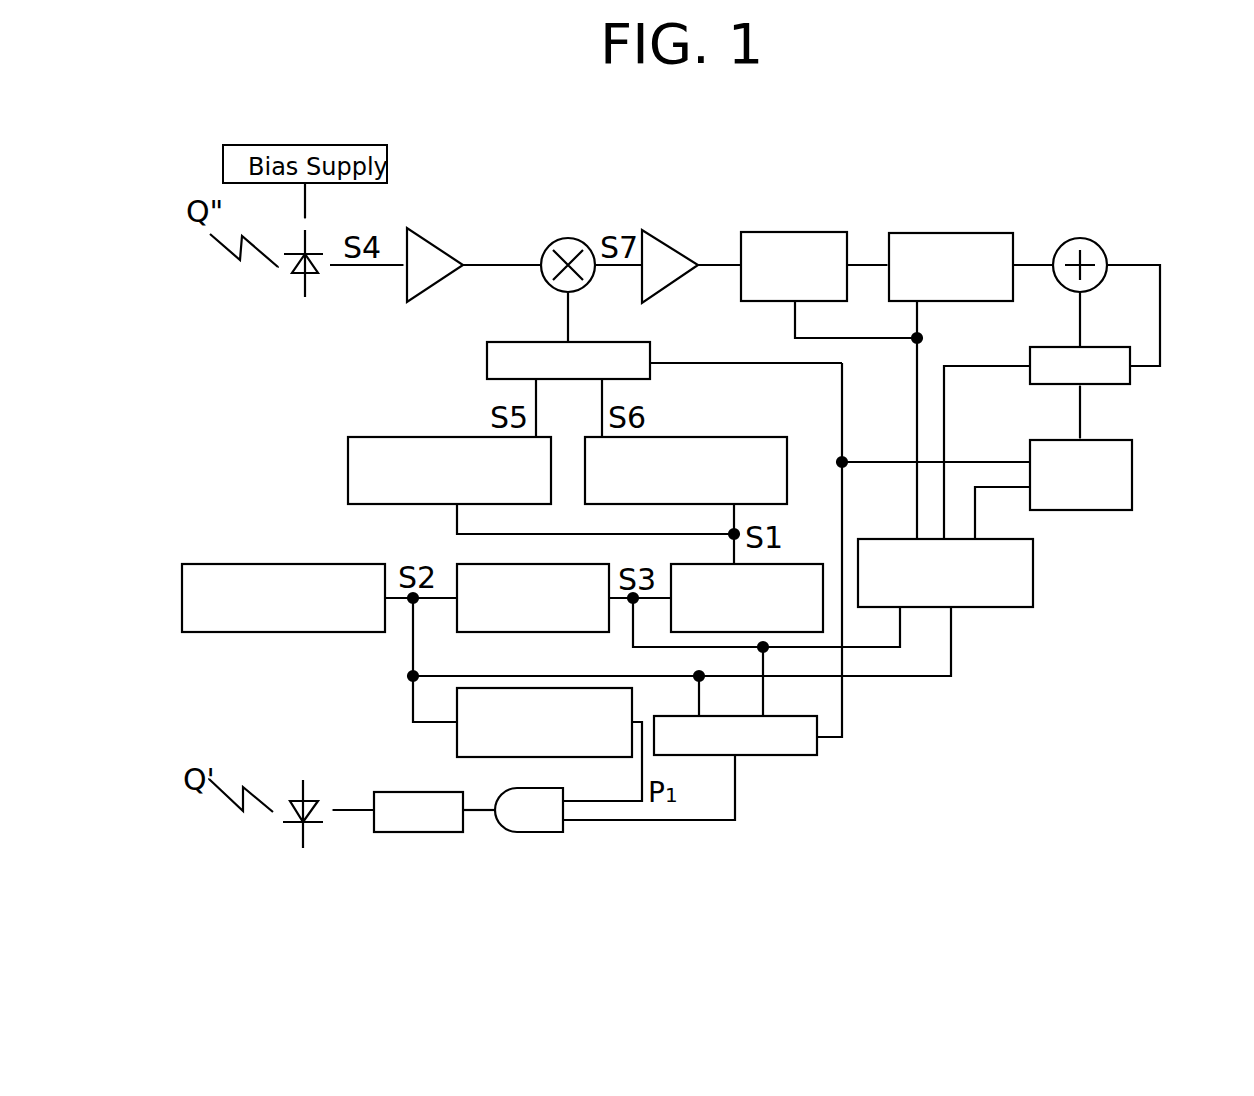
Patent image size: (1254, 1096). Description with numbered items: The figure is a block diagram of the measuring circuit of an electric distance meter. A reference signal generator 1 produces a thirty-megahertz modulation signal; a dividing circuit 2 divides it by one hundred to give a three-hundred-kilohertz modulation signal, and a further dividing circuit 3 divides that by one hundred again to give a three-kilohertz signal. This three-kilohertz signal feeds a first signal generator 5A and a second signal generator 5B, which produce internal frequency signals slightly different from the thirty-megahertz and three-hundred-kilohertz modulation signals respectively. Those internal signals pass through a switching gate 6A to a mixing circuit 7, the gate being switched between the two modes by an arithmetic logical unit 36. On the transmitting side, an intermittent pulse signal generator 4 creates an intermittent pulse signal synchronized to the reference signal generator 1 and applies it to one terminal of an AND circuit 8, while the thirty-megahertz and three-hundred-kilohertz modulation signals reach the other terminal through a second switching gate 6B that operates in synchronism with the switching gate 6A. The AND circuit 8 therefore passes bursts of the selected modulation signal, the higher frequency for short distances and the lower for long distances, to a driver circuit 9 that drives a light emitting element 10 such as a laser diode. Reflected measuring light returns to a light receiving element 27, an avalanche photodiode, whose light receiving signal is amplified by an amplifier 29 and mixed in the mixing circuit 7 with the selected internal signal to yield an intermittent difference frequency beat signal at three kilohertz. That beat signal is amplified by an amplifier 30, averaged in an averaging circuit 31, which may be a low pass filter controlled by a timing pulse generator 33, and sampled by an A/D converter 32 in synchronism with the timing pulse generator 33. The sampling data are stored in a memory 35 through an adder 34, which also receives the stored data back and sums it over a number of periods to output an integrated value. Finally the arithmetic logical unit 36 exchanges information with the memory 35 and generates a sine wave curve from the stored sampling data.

The reference signal generator 1 is at (272, 564).
The dividing circuit 2 is at (548, 632).
The dividing circuit 3 is at (808, 564).
The intermittent pulse signal generator 4 is at (457, 750).
The first signal generator 5A is at (358, 437).
The second signal generator 5B is at (775, 437).
The switching gate 6A is at (487, 348).
The switching gate 6B is at (790, 757).
The mixing circuit 7 is at (566, 250).
The AND circuit 8 is at (535, 832).
The driver circuit 9 is at (403, 832).
The light emitting element 10 is at (300, 825).
The light receiving element 27 is at (288, 280).
The amplifier 29 is at (430, 250).
The amplifier 30 is at (664, 250).
The averaging circuit 31 is at (798, 232).
The A/D converter 32 is at (946, 233).
The timing pulse generator 33 is at (1033, 572).
The adder 34 is at (1095, 248).
The memory 35 is at (1131, 378).
The arithmetic logical unit 36 is at (1133, 473).